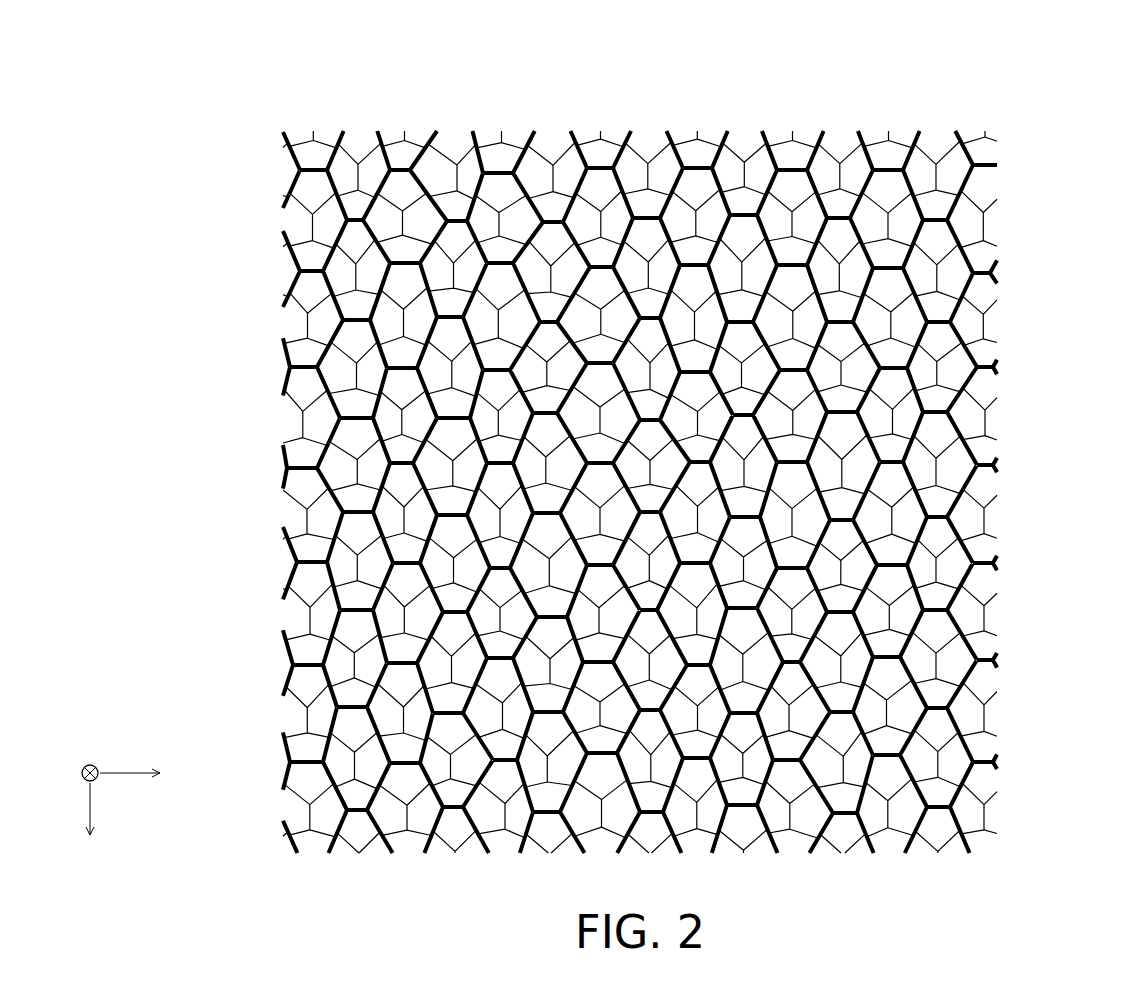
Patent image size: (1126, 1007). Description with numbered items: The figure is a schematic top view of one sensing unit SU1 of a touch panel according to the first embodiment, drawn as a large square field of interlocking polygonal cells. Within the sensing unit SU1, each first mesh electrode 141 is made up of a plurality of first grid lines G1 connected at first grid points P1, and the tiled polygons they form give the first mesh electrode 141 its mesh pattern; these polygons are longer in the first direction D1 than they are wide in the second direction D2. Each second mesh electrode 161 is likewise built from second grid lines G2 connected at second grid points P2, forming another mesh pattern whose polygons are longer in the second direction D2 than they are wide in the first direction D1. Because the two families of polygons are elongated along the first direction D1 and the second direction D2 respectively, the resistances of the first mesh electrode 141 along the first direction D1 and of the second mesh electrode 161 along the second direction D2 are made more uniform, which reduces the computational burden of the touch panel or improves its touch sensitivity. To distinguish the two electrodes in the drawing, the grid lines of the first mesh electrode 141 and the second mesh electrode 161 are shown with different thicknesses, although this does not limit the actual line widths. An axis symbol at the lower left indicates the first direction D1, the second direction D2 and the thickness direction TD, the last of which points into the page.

The sensing unit SU1 is at (341, 104).
The first mesh electrode 141 is at (762, 82).
The first grid line G1 is at (557, 213).
The first grid point P1 is at (597, 210).
The second mesh electrode 161 is at (1058, 178).
The second grid point P2 is at (960, 203).
The second grid line G2 is at (960, 227).
The thickness direction TD is at (84, 758).
The first direction D1 is at (149, 773).
The second direction D2 is at (85, 828).